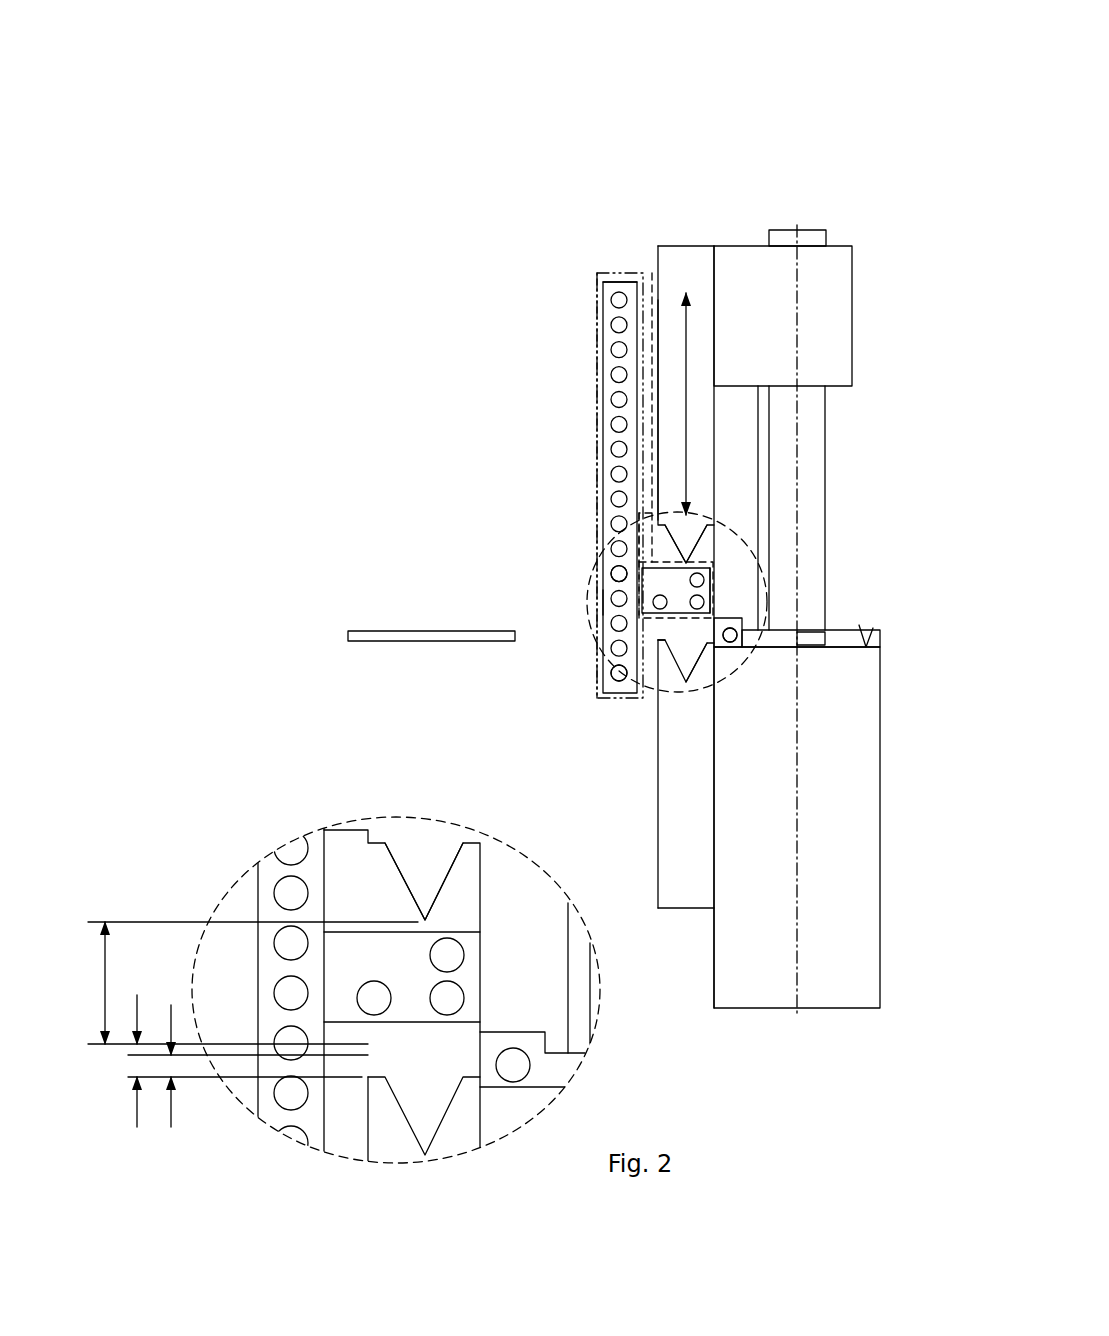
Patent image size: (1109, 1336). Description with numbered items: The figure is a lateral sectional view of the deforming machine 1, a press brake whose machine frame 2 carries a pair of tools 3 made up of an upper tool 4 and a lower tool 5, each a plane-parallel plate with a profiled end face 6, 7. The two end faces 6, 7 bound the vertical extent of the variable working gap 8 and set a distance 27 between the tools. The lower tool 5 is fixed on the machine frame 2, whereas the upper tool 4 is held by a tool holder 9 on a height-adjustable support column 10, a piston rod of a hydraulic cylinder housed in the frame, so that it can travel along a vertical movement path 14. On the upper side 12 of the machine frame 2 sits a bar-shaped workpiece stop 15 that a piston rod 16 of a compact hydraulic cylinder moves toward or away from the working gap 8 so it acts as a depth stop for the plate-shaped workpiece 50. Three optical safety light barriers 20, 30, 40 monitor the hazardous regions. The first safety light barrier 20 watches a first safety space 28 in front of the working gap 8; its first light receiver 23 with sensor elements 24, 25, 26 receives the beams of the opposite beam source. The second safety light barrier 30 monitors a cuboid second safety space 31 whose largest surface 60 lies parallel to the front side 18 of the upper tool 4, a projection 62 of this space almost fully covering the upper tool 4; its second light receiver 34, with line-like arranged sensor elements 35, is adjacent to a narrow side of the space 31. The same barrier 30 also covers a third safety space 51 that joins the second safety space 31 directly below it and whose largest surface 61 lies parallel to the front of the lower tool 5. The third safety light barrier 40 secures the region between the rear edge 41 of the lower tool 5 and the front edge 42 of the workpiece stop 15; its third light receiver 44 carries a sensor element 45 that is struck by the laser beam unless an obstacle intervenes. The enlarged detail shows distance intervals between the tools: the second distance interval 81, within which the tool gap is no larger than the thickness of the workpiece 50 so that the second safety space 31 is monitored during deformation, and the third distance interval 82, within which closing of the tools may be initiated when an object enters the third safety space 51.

The deforming machine 1 is at (770, 130).
The machine frame 2 is at (855, 853).
The pair of tools 3 is at (690, 205).
The upper tool 4 is at (677, 267).
The lower tool 5 is at (677, 885).
The end face 6 is at (684, 560).
The end face 7 is at (622, 678).
The working gap 8 is at (612, 574).
The tool holder 9 is at (845, 302).
The support column 10 is at (815, 230).
The upper side 12 is at (872, 632).
The movement path 14 is at (687, 373).
The workpiece stop 15 is at (765, 648).
The piston rod 16 is at (815, 648).
The front side 18 is at (658, 405).
The first optical safety light barrier 20 is at (583, 619).
The first light receiver 23 is at (608, 602).
The sensor element 24 is at (700, 578).
The sensor element 25 is at (699, 603).
The sensor element 26 is at (657, 607).
The distance 27 is at (730, 508).
The first safety space 28 is at (640, 523).
The second optical safety light barrier 30 is at (590, 462).
The second safety space 31 is at (597, 373).
The second light receiver 34 is at (605, 283).
The sensor elements 35 is at (615, 326).
The third optical safety light barrier 40 is at (727, 654).
The rear edge 41 is at (707, 644).
The front edge 42 is at (735, 648).
The third light receiver 44 is at (713, 594).
The sensor element 45 is at (737, 627).
The workpiece 50 is at (375, 635).
The third safety space 51 is at (655, 580).
The largest surface 60 is at (641, 361).
The largest surface 61 is at (668, 630).
The projection 62 is at (652, 311).
The second distance interval 81 is at (105, 983).
The third distance interval 82 is at (173, 1063).